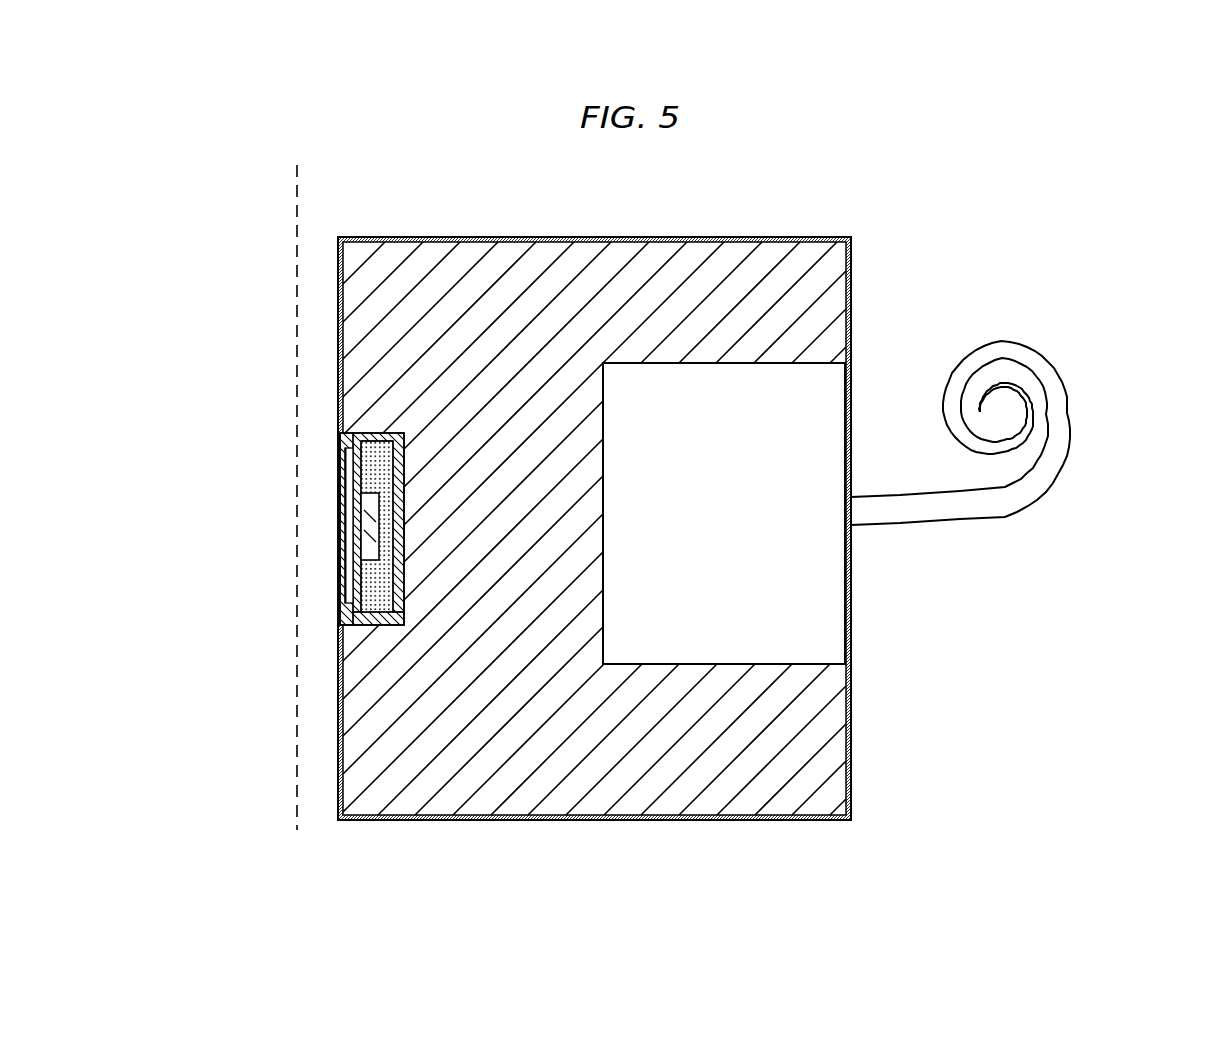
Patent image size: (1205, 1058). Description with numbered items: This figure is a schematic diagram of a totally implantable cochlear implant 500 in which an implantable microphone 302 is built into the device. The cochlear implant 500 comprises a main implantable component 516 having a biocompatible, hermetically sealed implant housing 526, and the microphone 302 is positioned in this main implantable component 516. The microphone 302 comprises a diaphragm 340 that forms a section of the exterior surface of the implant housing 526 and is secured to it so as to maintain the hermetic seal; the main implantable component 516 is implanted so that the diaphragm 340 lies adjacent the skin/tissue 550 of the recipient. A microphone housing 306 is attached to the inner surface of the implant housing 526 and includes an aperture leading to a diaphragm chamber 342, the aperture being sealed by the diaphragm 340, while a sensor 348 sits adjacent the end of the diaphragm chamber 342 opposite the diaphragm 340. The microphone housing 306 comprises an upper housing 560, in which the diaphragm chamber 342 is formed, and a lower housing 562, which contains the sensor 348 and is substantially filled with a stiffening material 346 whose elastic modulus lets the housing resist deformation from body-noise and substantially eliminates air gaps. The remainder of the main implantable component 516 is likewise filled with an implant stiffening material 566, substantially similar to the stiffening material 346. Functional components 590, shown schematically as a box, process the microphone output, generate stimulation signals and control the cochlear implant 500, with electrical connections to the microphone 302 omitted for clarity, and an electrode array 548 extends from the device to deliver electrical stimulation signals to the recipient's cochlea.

The cochlear implant 500 is at (970, 150).
The main implantable component 516 is at (832, 800).
The implant housing 526 is at (852, 285).
The implant stiffening material 566 is at (790, 272).
The functional components 590 is at (820, 668).
The electrode array 548 is at (1005, 508).
The skin/tissue 550 is at (297, 340).
The microphone 302 is at (283, 544).
The microphone housing 306 is at (383, 622).
The lower housing 562 is at (395, 622).
The upper housing 560 is at (347, 627).
The diaphragm chamber 342 is at (340, 477).
The diaphragm 340 is at (340, 517).
The stiffening material 346 is at (385, 445).
The sensor 348 is at (363, 535).